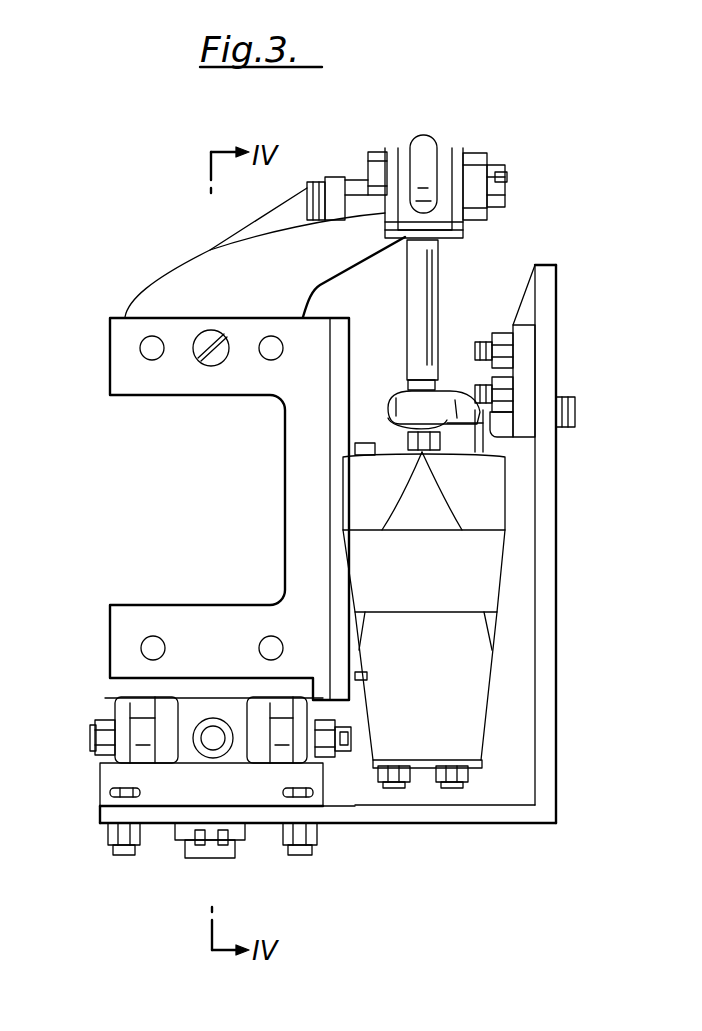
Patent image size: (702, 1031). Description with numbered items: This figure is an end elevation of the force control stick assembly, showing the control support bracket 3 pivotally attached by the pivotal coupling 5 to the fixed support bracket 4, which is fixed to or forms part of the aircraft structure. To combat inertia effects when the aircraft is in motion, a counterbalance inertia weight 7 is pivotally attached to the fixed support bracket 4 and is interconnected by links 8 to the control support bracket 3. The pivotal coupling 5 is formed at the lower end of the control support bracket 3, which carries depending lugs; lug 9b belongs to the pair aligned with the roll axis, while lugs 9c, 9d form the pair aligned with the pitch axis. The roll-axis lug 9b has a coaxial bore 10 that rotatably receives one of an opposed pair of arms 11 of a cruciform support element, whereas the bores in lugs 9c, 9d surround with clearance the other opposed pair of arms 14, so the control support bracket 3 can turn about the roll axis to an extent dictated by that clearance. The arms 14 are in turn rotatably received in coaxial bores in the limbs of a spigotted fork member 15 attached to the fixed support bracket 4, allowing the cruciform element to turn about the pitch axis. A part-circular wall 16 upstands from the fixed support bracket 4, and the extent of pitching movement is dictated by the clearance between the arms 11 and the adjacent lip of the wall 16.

The control support bracket 3 is at (283, 510).
The fixed support bracket 4 is at (550, 637).
The pivotal coupling 5 is at (82, 735).
The counterbalance inertia weight 7 is at (490, 570).
The links 8 is at (430, 312).
The depending lug 9b is at (183, 748).
The depending lug 9c is at (337, 757).
The depending lug 9d is at (110, 700).
The coaxial bore 10 is at (213, 718).
The arms 11 is at (205, 742).
The arms 14 is at (143, 723).
The spigotted fork member 15 is at (260, 755).
The part-circular wall 16 is at (100, 785).